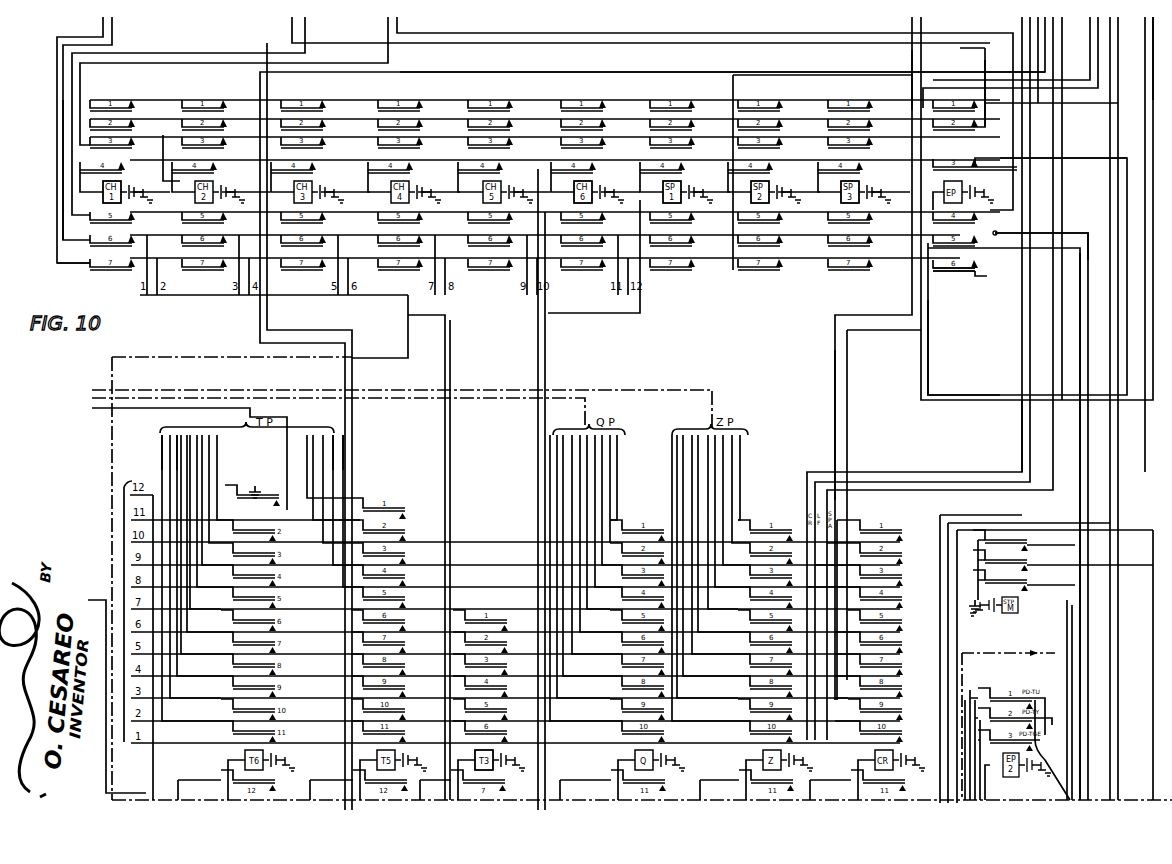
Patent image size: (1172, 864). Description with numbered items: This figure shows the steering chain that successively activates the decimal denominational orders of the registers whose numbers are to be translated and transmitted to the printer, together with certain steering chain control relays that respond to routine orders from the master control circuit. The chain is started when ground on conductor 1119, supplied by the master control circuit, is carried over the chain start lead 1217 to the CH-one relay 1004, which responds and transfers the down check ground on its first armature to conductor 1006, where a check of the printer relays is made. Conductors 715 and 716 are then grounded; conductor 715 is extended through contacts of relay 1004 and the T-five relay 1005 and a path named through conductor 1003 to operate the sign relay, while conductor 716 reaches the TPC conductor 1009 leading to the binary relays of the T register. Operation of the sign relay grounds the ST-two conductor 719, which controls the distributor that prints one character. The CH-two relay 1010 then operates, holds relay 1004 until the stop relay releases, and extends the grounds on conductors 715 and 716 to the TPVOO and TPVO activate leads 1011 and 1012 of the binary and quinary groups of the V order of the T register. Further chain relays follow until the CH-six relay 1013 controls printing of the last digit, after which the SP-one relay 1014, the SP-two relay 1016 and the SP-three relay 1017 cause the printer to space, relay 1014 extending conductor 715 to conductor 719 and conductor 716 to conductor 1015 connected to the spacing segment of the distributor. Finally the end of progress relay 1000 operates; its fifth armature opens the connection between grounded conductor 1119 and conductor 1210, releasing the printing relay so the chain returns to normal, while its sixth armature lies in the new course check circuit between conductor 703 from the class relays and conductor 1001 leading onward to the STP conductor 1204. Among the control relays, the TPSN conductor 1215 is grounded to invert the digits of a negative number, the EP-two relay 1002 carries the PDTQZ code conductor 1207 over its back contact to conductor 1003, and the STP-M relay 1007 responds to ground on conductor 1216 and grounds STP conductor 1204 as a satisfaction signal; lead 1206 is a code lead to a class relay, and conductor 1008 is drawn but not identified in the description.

The conductor 703 is at (973, 276).
The conductor 715 is at (60, 235).
The conductor 716 is at (57, 266).
The ST-2 conductor 719 is at (910, 63).
The EP relay 1000 is at (1006, 173).
The conductor 1001 is at (931, 366).
The EP-2 relay 1002 is at (1003, 776).
The conductor 1003 is at (1072, 800).
The CH-1 relay 1004 is at (120, 182).
The T-5 relay 1005 is at (475, 758).
The conductor 1006 is at (985, 66).
The STP-M relay 1007 is at (998, 614).
The conductor 1008 is at (562, 74).
The TPC conductor 1009 is at (342, 457).
The CH-2 relay 1010 is at (182, 182).
The TPVOO activate lead 1011 is at (165, 444).
The TPVO activate lead 1012 is at (180, 455).
The CH-6 relay 1013 is at (576, 203).
The SP-1 relay 1014 is at (663, 182).
The conductor 1015 is at (835, 405).
The SP-2 relay 1016 is at (755, 205).
The SP-3 relay 1017 is at (840, 203).
The conductor 1119 is at (1067, 218).
The STP conductor 1204 is at (1153, 68).
The lead 1206 is at (1022, 442).
The PDTQZ conductor 1207 is at (982, 800).
The conductor 1210 is at (1080, 326).
The TPSN conductor 1215 is at (333, 444).
The conductor 1216 is at (1050, 672).
The chain start lead 1217 is at (1074, 160).